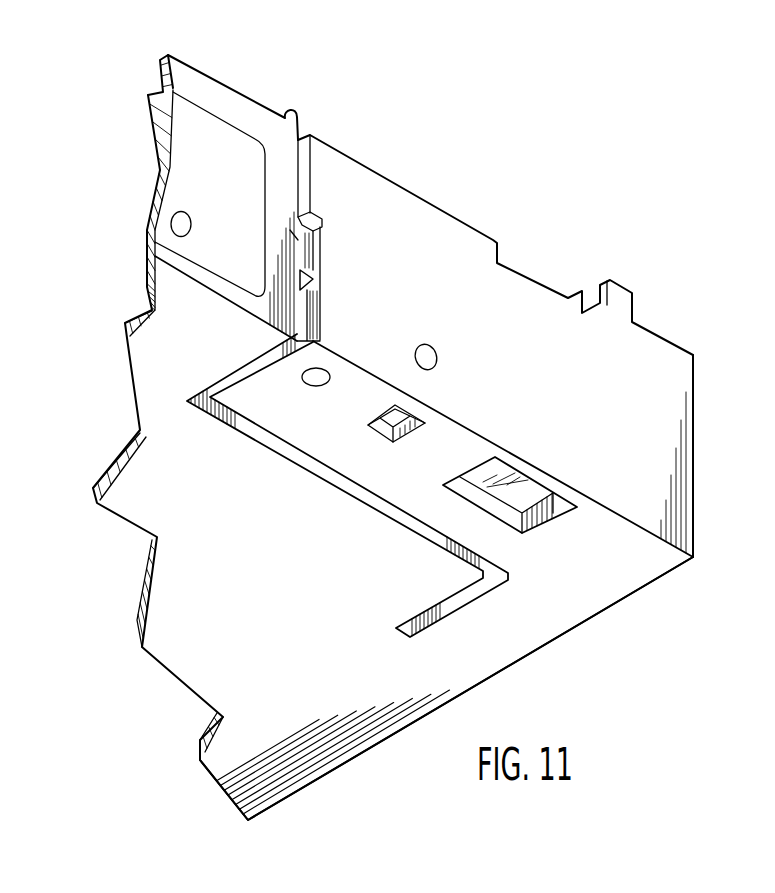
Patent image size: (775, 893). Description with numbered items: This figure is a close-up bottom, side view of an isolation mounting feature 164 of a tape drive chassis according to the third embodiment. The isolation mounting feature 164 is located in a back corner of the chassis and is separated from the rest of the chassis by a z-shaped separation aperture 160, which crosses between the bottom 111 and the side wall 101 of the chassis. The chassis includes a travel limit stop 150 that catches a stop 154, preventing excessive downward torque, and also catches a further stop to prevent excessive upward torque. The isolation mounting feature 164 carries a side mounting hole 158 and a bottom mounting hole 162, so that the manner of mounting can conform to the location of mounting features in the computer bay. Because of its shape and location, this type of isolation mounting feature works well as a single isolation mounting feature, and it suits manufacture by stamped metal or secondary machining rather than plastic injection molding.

The side wall 101 is at (230, 102).
The bottom 111 is at (313, 763).
The travel limit stop 150 is at (299, 242).
The stop 154 is at (317, 207).
The side mounting hole 158 is at (436, 352).
The z-shaped separation aperture 160 is at (300, 455).
The bottom mounting hole 162 is at (318, 386).
The isolation mounting feature 164 is at (682, 384).